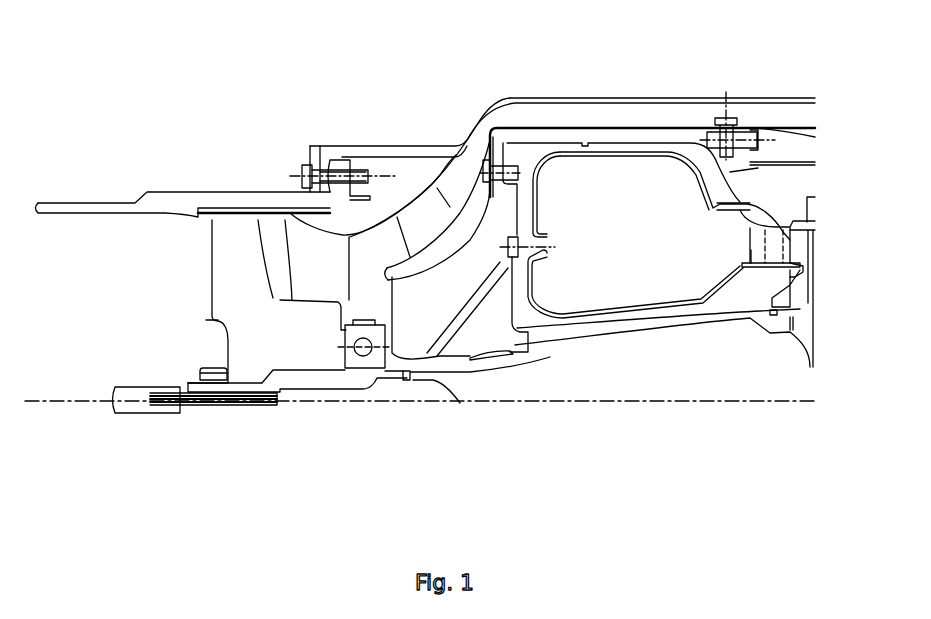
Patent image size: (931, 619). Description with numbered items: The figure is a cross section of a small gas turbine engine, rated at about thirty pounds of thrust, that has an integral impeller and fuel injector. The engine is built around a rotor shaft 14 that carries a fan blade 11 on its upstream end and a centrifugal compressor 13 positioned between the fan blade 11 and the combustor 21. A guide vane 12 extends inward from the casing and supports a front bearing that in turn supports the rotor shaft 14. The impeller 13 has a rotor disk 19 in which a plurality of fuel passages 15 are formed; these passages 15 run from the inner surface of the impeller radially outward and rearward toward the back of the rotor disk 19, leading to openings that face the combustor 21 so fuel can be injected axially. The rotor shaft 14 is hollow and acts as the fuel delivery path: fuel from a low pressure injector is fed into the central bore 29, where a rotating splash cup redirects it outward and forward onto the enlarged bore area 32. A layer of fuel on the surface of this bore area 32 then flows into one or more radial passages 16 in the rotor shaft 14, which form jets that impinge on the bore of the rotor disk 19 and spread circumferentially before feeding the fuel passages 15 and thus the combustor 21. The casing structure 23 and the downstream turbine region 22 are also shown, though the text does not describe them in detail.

The fan blade 11 is at (240, 257).
The guide vane 12 is at (312, 248).
The centrifugal compressor 13 is at (460, 267).
The rotor shaft 14 is at (312, 380).
The fuel passages 15 is at (472, 298).
The radial passages 16 is at (430, 380).
The rotor disk 19 is at (475, 330).
The combustor 21 is at (641, 246).
The turbine wheel 22 is at (751, 250).
The housing 23 is at (556, 133).
The central bore 29 is at (297, 397).
The enlarged bore area 32 is at (377, 380).